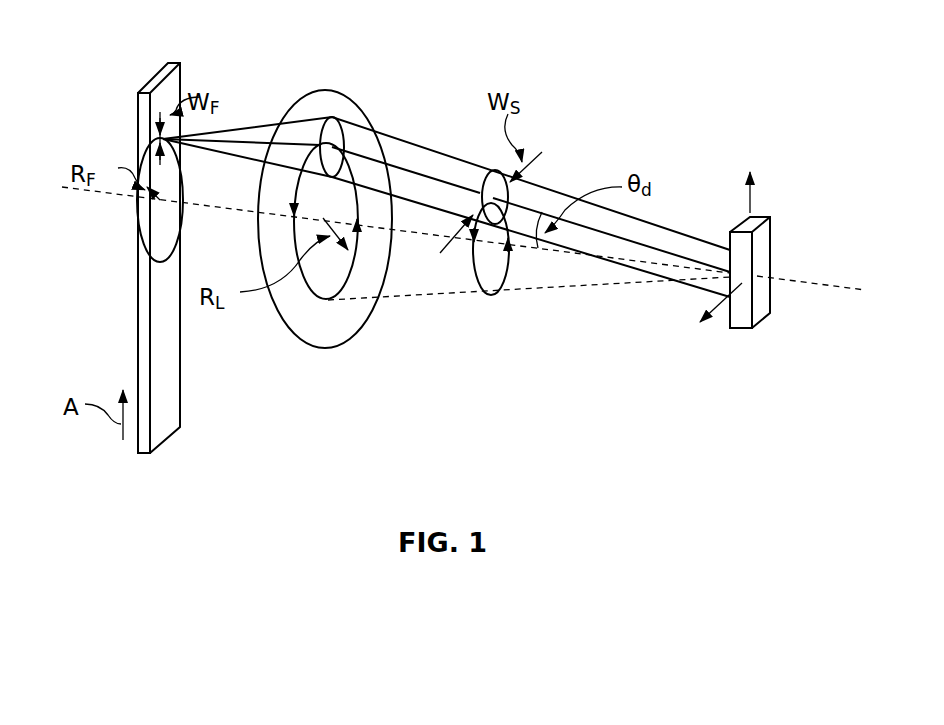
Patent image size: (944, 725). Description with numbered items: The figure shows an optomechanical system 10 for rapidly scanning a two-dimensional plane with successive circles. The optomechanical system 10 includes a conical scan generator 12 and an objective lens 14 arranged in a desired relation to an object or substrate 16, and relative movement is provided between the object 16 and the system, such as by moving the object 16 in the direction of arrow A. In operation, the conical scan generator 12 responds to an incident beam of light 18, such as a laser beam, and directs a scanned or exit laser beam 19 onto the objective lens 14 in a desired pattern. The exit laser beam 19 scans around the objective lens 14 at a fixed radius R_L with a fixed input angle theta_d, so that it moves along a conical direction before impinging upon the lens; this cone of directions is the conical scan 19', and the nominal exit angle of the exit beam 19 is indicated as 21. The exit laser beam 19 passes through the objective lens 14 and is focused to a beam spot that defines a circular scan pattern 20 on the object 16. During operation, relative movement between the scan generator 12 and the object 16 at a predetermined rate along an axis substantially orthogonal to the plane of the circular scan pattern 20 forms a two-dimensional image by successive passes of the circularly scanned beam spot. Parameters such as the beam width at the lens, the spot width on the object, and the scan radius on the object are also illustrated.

The optomechanical system 10 is at (100, 38).
The conical scan generator 12 is at (744, 334).
The objective lens 14 is at (313, 352).
The object (substrate) 16 is at (180, 368).
The incident beam of light 18 is at (832, 289).
The scanned laser beam (exit laser beam) 19 is at (529, 317).
The conical scan 19' is at (457, 251).
The circular scan pattern 20 is at (157, 256).
The nominal exit angle 21 is at (420, 233).